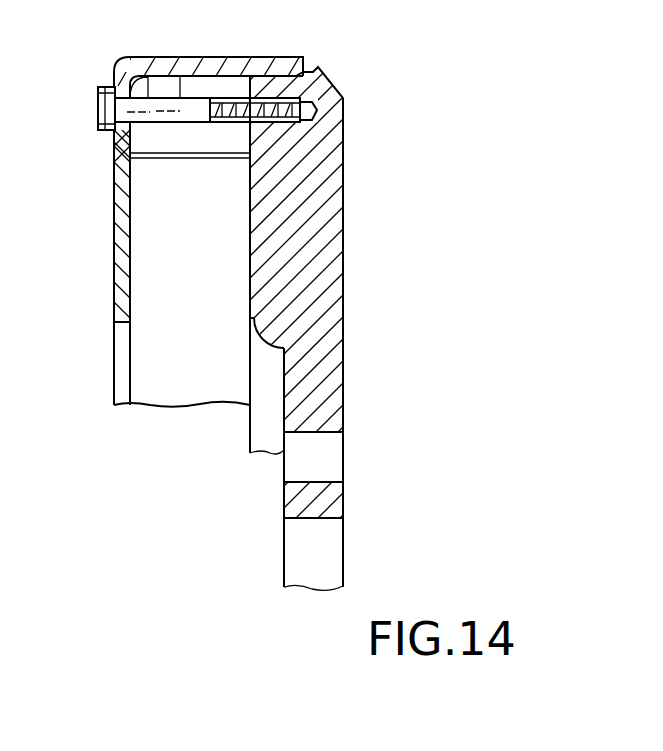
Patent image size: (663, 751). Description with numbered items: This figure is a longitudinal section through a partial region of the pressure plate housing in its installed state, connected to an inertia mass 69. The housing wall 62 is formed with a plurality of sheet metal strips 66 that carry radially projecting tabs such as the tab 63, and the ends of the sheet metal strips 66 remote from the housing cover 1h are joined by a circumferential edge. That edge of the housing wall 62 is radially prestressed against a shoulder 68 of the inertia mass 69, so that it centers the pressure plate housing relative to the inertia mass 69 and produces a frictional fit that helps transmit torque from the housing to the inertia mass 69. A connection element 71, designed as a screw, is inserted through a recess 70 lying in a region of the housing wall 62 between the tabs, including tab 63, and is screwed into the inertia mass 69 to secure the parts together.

The housing wall 62 is at (205, 50).
The sheet metal strips 66 is at (237, 63).
The shoulder 68 is at (283, 50).
The connection element 71 is at (171, 100).
The recess 70 is at (108, 152).
The tab 63 is at (207, 148).
The housing cover 1h is at (114, 236).
The inertia mass 69 is at (330, 226).